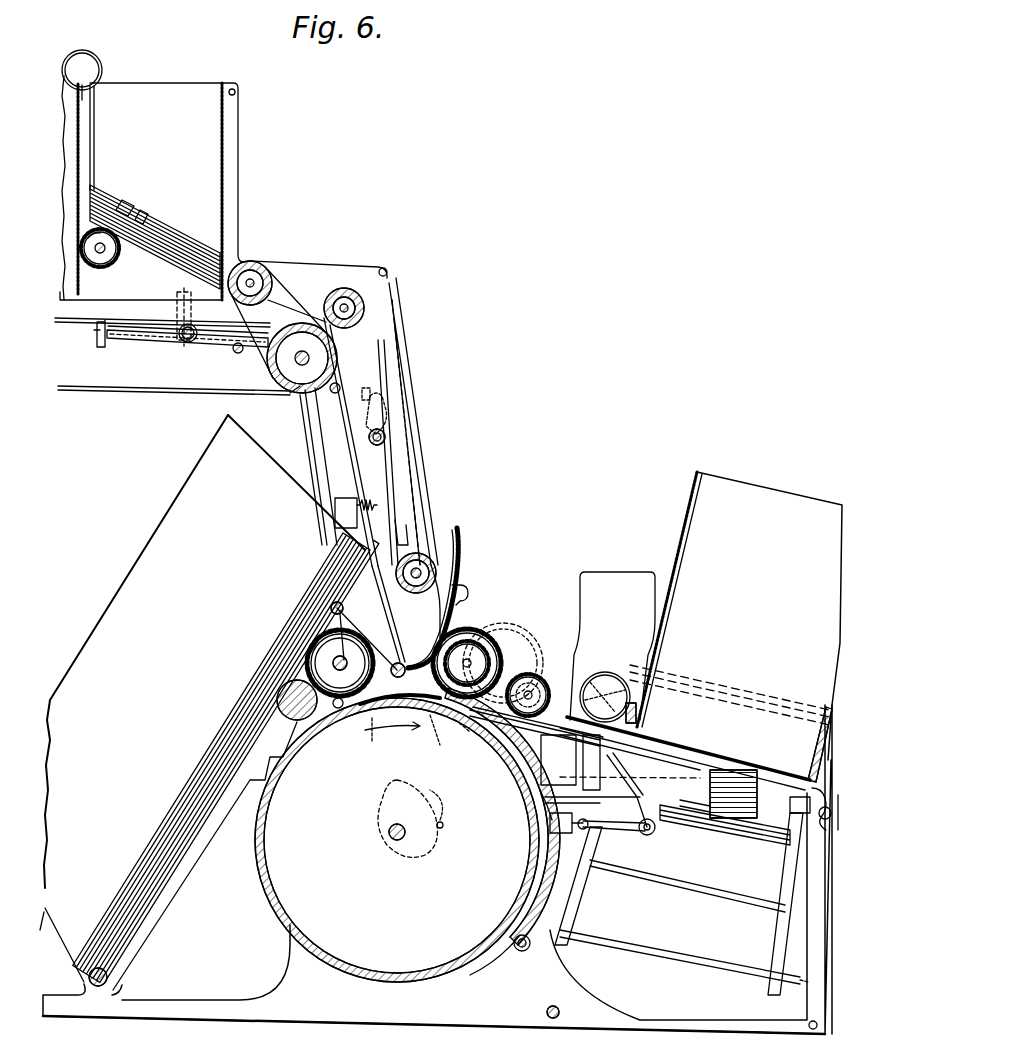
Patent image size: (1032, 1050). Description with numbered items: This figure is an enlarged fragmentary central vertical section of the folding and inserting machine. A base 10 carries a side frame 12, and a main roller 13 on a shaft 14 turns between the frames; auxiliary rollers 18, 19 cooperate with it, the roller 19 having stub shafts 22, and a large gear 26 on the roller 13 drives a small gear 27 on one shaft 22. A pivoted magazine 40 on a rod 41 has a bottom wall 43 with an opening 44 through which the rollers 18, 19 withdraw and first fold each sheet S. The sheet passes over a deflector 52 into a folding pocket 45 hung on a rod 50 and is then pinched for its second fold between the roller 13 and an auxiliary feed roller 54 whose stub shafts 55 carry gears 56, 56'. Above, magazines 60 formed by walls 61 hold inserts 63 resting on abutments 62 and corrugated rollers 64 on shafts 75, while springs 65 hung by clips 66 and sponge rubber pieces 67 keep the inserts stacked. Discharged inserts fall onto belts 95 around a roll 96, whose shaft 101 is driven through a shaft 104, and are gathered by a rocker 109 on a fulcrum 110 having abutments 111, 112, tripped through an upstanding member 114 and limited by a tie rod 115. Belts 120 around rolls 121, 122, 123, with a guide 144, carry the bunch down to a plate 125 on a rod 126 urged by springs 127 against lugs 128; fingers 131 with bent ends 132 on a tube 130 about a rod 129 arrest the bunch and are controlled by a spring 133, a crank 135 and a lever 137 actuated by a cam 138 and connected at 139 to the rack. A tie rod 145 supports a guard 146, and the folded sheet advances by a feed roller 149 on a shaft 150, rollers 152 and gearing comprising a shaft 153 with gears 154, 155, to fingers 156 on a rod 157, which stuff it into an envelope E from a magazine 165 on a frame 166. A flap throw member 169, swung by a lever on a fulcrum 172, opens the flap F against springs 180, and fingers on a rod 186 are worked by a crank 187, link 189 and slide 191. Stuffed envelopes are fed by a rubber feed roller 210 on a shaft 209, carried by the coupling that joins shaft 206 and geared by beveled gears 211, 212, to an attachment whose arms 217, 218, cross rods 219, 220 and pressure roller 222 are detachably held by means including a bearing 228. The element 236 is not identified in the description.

The base 10 is at (222, 1012).
The side frame 12 is at (170, 893).
The main roller 13 is at (258, 858).
The shaft 14 is at (398, 824).
The auxiliary roller 18 is at (298, 722).
The auxiliary roller 19 is at (338, 710).
The stub shaft 22 is at (328, 606).
The large gear 26 is at (372, 740).
The small gear 27 is at (312, 665).
The magazine 40 is at (122, 580).
The rod 41 is at (97, 986).
The bottom wall 43 is at (140, 918).
The opening 44 is at (308, 646).
The sheet folding pocket 45 is at (460, 532).
The rod 50 is at (462, 586).
The deflector 52 is at (392, 715).
The auxiliary feed roller 54 is at (508, 626).
The stub shaft 55 is at (432, 732).
The gear 56 is at (470, 637).
The gear 56' is at (475, 643).
The magazine 60 is at (178, 92).
The dividing wall 61 is at (78, 162).
The abutment 62 is at (200, 322).
The insert 63 is at (170, 236).
The roller 64 is at (101, 262).
The spring 65 is at (95, 122).
The clip 66 is at (92, 78).
The sponge rubber piece 67 is at (136, 208).
The shaft 75 is at (107, 253).
The endless belt 95 is at (128, 394).
The roll 96 is at (290, 394).
The shaft 101 is at (338, 358).
The shaft 104 is at (294, 475).
The rocker 109 is at (152, 340).
The fulcrum 110 is at (188, 342).
The abutment 111 is at (280, 328).
The abutment 112 is at (102, 340).
The upstanding member 114 is at (177, 295).
The tie rod 115 is at (238, 354).
The belt 120 is at (398, 350).
The roll 121 is at (255, 262).
The roll 122 is at (366, 308).
The roll 123 is at (436, 566).
The plate 125 is at (334, 470).
The rod 126 is at (336, 394).
The compression spring 127 is at (360, 512).
The lug 128 is at (335, 510).
The rod 129 is at (386, 434).
The tube 130 is at (386, 440).
The finger 131 is at (398, 470).
The bent end 132 is at (408, 528).
The spring 133 is at (366, 388).
The crank 135 is at (386, 410).
The lever 137 is at (403, 330).
The cam 138 is at (375, 800).
The pin and slot connection 139 is at (388, 272).
The guide 144 is at (282, 298).
The tie rod 145 is at (420, 702).
The guard 146 is at (392, 652).
The feed roller 149 is at (500, 735).
The shaft 150 is at (462, 733).
The roller 152 is at (535, 780).
The shaft 153 is at (530, 676).
The gear 154 is at (505, 640).
The gear 155 is at (536, 682).
The finger 156 is at (535, 850).
The rod 157 is at (522, 951).
The magazine 165 is at (770, 492).
The frame 166 is at (640, 715).
The flap throw member 169 is at (568, 730).
The fulcrum 172 is at (547, 1013).
The spring 180 is at (605, 672).
The rod 186 is at (645, 836).
The crank 187 is at (645, 805).
The link 189 is at (605, 825).
The slide 191 is at (548, 825).
The shaft 206 is at (800, 813).
The shaft 209 is at (775, 838).
The rubber feed roller 210 is at (735, 820).
The beveled gear 211 is at (800, 772).
The beveled gear 212 is at (812, 820).
The arm 217 is at (778, 925).
The arm 218 is at (578, 915).
The cross rod 219 is at (738, 680).
The cross rod 220 is at (698, 958).
The pressure roller 222 is at (690, 812).
The bearing 228 is at (540, 705).
The guide 236 is at (618, 585).
The sheet S is at (225, 760).
The envelope E is at (742, 744).
The flap F is at (558, 700).